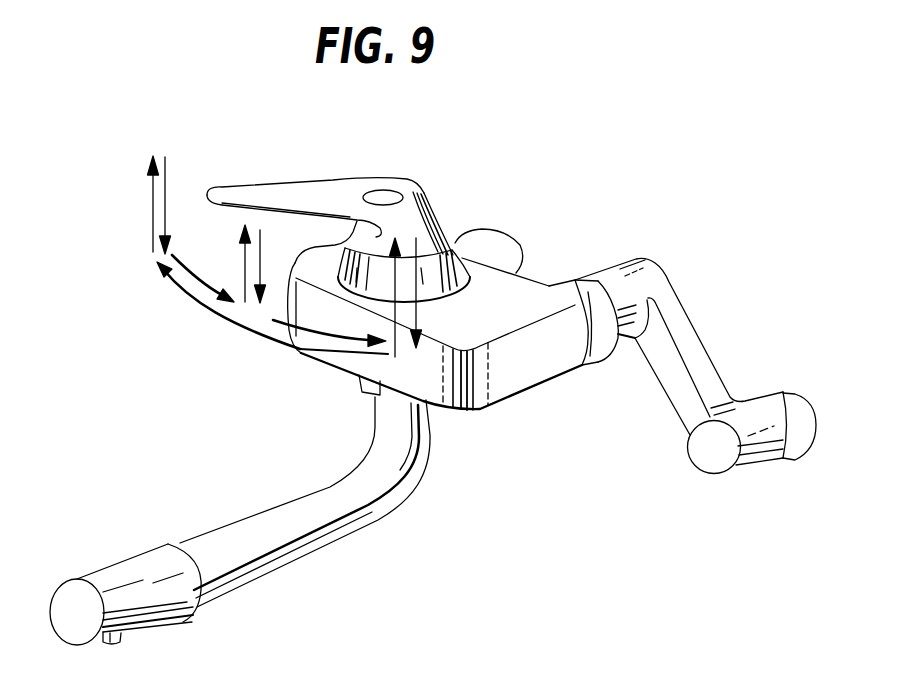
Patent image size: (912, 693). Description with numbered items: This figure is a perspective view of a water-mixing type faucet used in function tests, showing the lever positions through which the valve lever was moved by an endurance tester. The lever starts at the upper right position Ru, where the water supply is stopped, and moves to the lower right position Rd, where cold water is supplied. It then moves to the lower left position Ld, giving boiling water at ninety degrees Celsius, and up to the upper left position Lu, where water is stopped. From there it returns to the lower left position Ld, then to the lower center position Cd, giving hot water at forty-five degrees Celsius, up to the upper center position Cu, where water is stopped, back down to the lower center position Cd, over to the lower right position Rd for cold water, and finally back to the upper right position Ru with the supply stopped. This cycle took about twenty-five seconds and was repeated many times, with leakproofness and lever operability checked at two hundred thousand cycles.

The upper left position Lu is at (195, 250).
The lower left position Ld is at (195, 250).
The upper center position Cu is at (253, 257).
The lower center position Cd is at (253, 257).
The upper right position Ru is at (416, 300).
The lower right position Rd is at (416, 300).